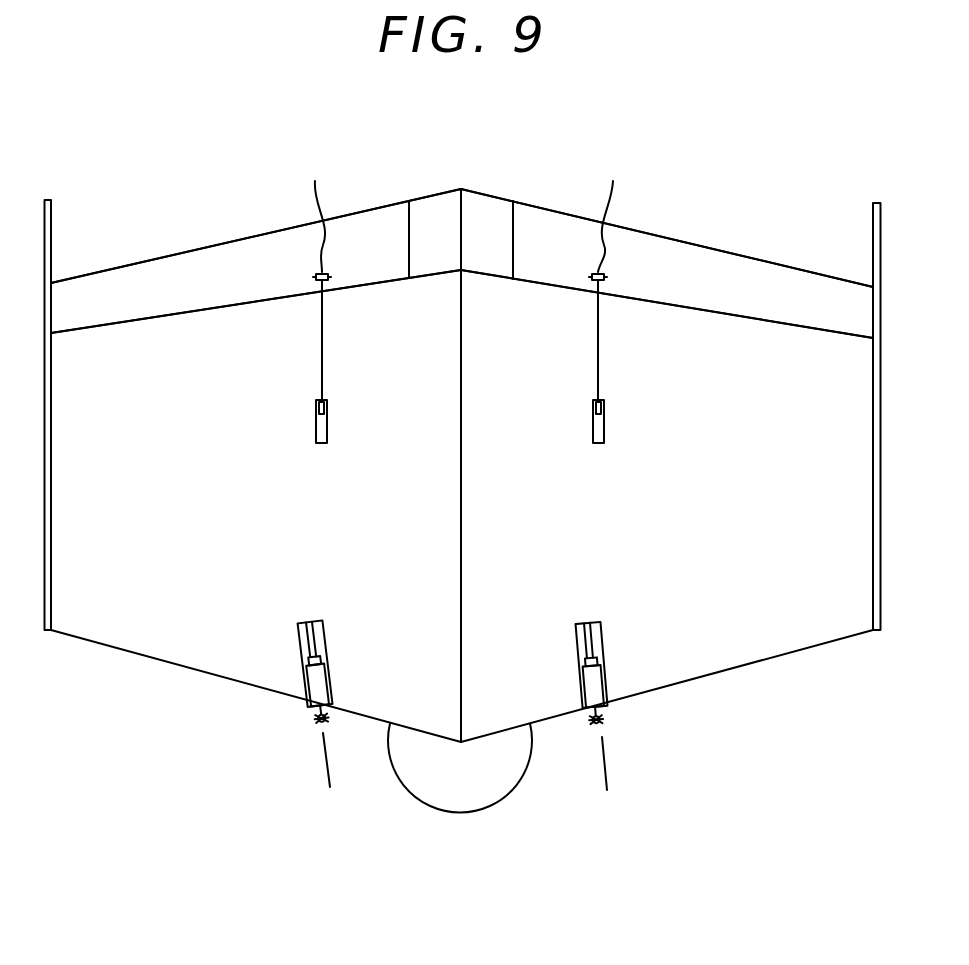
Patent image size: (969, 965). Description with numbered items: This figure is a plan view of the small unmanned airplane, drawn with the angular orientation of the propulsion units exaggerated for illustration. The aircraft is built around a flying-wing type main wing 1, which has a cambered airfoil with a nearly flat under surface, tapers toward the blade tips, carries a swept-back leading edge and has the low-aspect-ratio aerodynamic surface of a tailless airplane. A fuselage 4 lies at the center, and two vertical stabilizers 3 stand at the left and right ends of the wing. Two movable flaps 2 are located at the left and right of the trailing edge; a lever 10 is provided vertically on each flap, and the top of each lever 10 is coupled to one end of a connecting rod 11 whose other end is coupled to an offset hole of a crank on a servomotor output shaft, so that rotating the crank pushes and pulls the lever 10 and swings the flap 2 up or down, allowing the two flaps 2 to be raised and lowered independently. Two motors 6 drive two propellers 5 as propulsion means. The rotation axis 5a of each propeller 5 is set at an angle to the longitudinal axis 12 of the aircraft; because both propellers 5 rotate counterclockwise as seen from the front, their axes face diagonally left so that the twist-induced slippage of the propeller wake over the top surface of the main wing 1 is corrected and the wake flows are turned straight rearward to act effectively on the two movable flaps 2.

The main wing 1 is at (762, 664).
The movable flap 2 is at (228, 242).
The vertical stabilizer 3 is at (51, 232).
The fuselage 4 is at (513, 762).
The propeller 5 is at (314, 724).
The rotation axis 5a is at (328, 767).
The motor 6 is at (318, 686).
The lever 10 is at (464, 273).
The connecting rod 11 is at (322, 345).
The longitudinal axis 12 is at (461, 517).